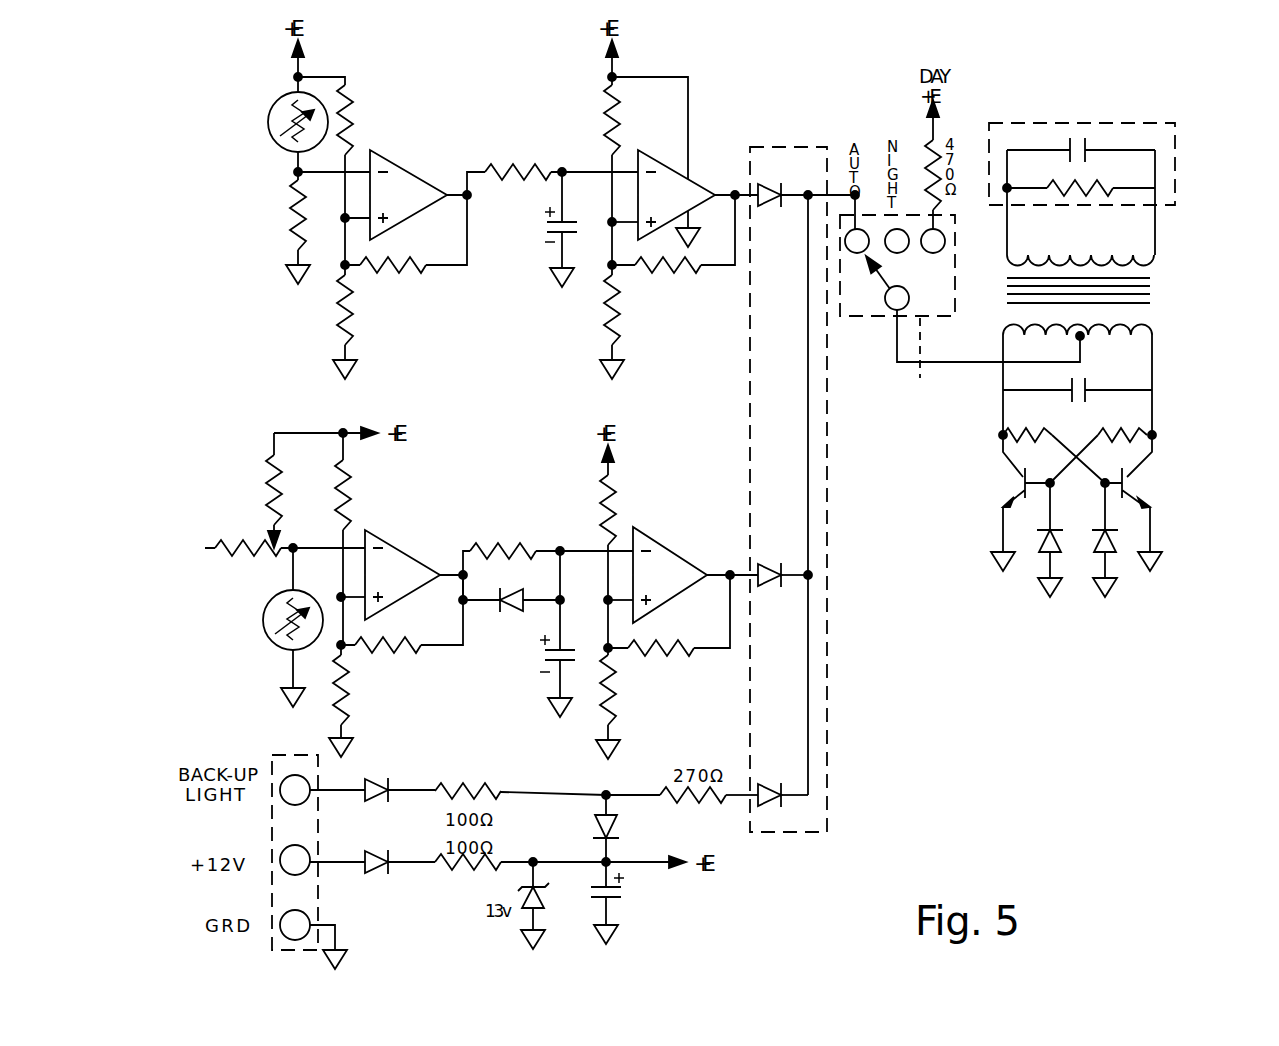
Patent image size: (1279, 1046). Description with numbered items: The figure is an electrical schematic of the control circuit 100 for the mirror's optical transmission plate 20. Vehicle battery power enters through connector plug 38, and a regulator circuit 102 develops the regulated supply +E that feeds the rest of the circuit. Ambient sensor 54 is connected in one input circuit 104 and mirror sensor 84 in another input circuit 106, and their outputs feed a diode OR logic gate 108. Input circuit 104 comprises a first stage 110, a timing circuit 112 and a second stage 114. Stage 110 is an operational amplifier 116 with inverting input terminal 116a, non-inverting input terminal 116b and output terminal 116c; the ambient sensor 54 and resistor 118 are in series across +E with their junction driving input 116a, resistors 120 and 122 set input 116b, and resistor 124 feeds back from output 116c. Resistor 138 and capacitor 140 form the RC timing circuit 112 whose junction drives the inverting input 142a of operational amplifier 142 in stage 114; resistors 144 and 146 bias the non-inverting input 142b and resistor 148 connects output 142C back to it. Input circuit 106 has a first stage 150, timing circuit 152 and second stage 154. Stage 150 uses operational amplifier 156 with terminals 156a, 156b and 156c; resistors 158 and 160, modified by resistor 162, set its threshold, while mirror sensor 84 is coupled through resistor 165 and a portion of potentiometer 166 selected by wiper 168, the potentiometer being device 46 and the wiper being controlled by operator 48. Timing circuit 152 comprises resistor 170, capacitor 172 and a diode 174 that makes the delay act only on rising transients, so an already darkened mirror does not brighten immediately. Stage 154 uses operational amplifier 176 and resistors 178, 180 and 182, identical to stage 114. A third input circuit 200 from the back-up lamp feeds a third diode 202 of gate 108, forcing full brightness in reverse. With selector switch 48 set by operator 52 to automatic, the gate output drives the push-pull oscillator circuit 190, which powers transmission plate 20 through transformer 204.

The transmission plate 20 is at (1178, 135).
The connector plug 38 is at (322, 883).
The device (potentiometer) 46 is at (220, 542).
The selector switch (operator) 48 is at (196, 482).
The operator 52 is at (882, 280).
The ambient sensor 54 is at (277, 134).
The mirror sensor 84 is at (260, 643).
The control circuit 100 is at (928, 792).
The regulator circuit 102 is at (660, 903).
The input circuit 104 is at (480, 82).
The input circuit 106 is at (517, 450).
The logic gate 108 is at (828, 538).
The first stage 110 is at (430, 157).
The timing circuit 112 is at (538, 158).
The second stage 114 is at (713, 140).
The operational amplifier 116 is at (408, 195).
The inverting input terminal 116a is at (369, 162).
The non-inverting input terminal 116b is at (370, 232).
The output terminal 116c is at (466, 172).
The resistor 118 is at (290, 215).
The resistor 120 is at (355, 110).
The resistor 122 is at (338, 305).
The resistor 124 is at (381, 272).
The resistor 138 is at (522, 180).
The capacitor 140 is at (545, 226).
The operational amplifier 142 is at (676, 198).
The inverting input terminal 142a is at (628, 162).
The non-inverting input terminal 142b is at (636, 243).
The output terminal 142C is at (717, 195).
The resistor 144 is at (605, 102).
The resistor 146 is at (618, 318).
The resistor 148 is at (672, 270).
The first stage 150 is at (416, 518).
The timing circuit 152 is at (526, 520).
The second stage 154 is at (680, 524).
The operational amplifier 156 is at (402, 575).
The input terminal 156a is at (366, 613).
The input terminal 156b is at (366, 540).
The output terminal 156c is at (441, 553).
The resistor 158 is at (340, 480).
The resistor 160 is at (346, 690).
The resistor 162 is at (402, 650).
The resistor 165 is at (270, 462).
The potentiometer 166 is at (240, 558).
The wiper 168 is at (278, 543).
The resistor 170 is at (514, 546).
The capacitor 172 is at (538, 655).
The diode 174 is at (522, 618).
The operational amplifier 176 is at (670, 575).
The resistor 178 is at (618, 500).
The resistor 180 is at (607, 710).
The resistor 182 is at (645, 656).
The oscillator circuit 190 is at (1188, 470).
The third input circuit 200 is at (484, 783).
The third diode 202 is at (765, 785).
The transformer 204 is at (1162, 265).